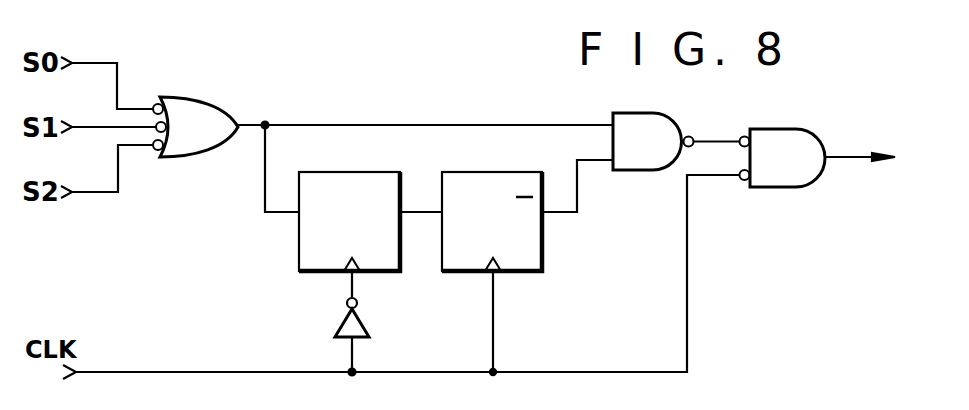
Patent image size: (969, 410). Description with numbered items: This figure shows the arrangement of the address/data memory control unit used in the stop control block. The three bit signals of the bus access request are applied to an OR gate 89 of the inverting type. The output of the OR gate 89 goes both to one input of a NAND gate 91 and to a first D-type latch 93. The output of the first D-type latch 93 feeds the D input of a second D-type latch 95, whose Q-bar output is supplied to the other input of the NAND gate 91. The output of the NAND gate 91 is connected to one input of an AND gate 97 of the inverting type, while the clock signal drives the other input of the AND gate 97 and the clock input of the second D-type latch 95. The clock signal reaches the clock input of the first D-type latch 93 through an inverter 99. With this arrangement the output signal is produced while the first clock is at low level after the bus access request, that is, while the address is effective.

The OR gate of the inverting type 89 is at (227, 106).
The NAND gate 91 is at (629, 172).
The first D-type latch 93 is at (299, 245).
The second D-type latch 95 is at (525, 272).
The AND gate of the inverting type 97 is at (786, 189).
The inverter 99 is at (364, 321).